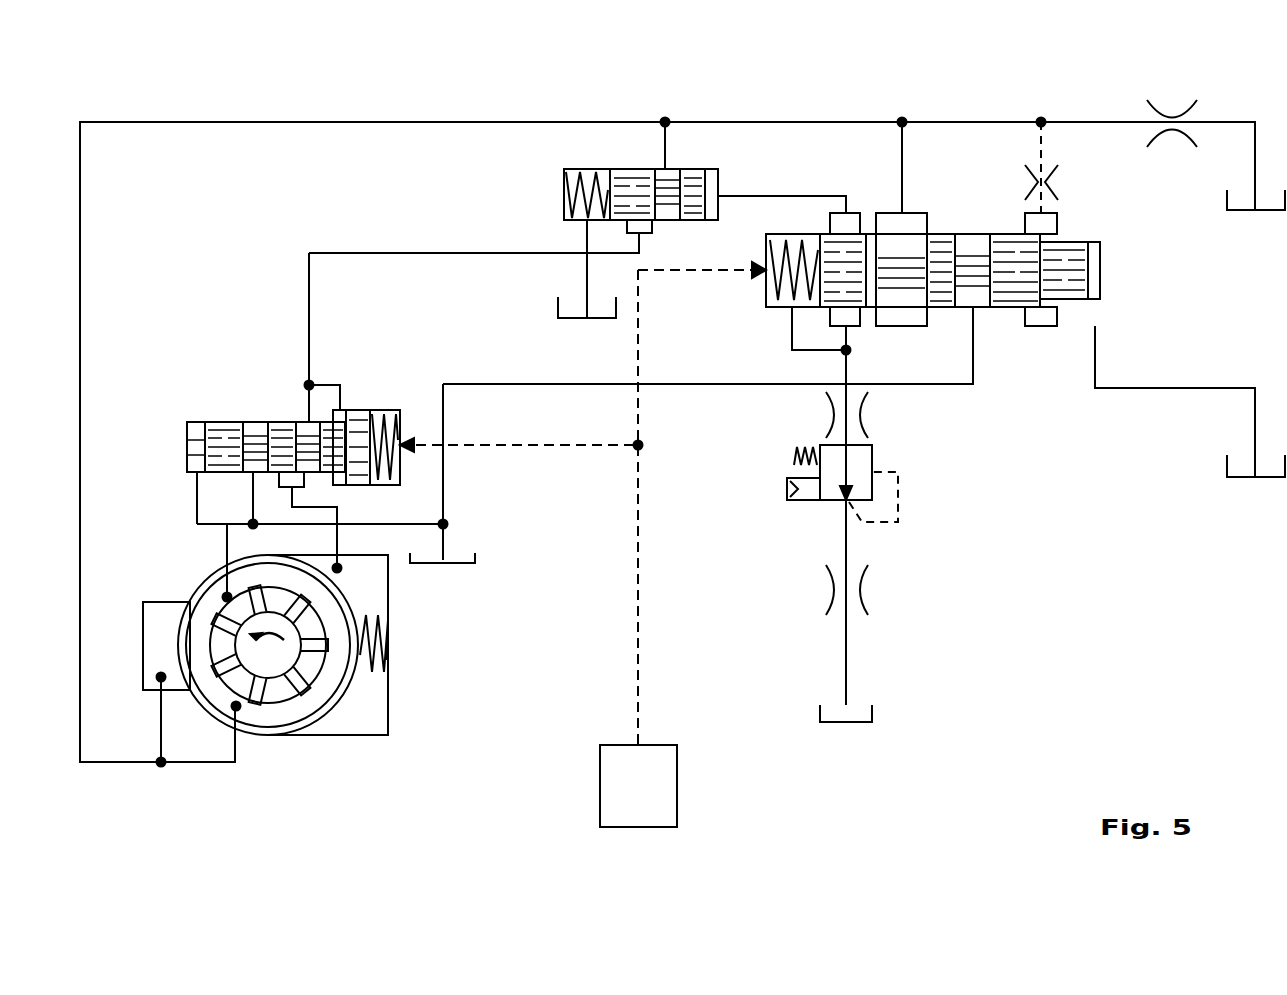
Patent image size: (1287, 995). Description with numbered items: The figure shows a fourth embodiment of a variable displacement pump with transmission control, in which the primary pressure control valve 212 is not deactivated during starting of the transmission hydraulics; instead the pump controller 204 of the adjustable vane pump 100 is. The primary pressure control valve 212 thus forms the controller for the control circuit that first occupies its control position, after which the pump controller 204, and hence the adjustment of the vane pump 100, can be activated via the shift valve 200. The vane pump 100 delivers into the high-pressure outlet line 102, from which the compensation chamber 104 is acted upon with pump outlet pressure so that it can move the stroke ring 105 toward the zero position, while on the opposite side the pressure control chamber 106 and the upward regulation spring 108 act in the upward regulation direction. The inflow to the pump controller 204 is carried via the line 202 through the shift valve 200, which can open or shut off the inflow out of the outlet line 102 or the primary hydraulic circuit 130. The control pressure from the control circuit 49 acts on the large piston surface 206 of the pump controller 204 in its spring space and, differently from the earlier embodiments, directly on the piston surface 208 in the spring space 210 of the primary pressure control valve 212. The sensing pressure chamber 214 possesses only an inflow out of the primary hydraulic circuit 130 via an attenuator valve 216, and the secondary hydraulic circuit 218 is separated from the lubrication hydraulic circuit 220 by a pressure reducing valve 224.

The control circuit 49 is at (650, 795).
The adjustable vane pump 100 is at (298, 756).
The outlet line 102 is at (563, 120).
The compensation chamber 104 is at (162, 658).
The stroke ring 105 is at (190, 624).
The pressure control chamber 106 is at (375, 718).
The upward regulation spring 108 is at (388, 684).
The primary hydraulic circuit 130 is at (1172, 118).
The shift valve 200 is at (697, 152).
The line 202 is at (309, 327).
The pump controller 204 is at (359, 392).
The large piston surface 206 is at (380, 420).
The piston surface 208 is at (820, 242).
The spring space 210 is at (772, 297).
The primary pressure control valve 212 is at (1112, 278).
The sensing pressure chamber 214 is at (1080, 318).
The attenuator valve 216 is at (1025, 186).
The secondary hydraulic circuit 218 is at (826, 415).
The lubrication hydraulic circuit 220 is at (826, 590).
The pressure reducing valve 224 is at (872, 452).